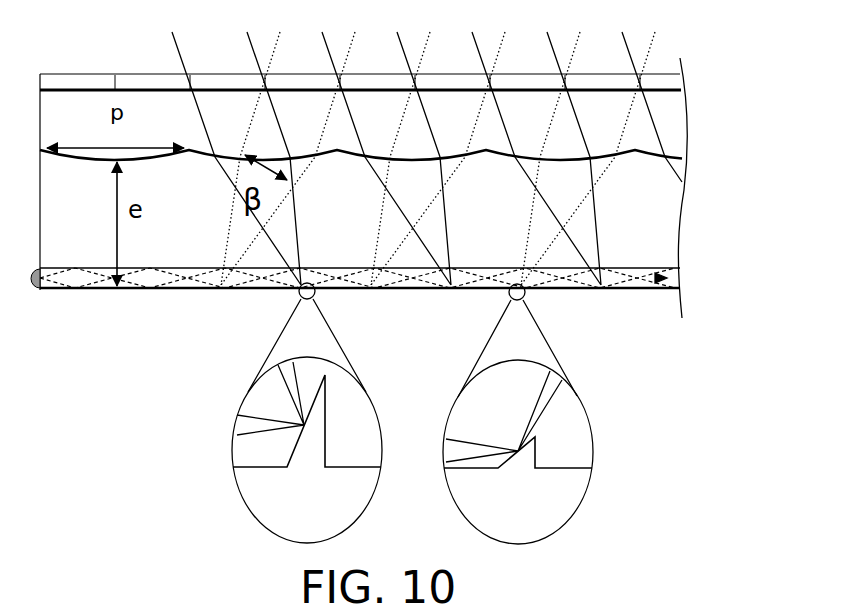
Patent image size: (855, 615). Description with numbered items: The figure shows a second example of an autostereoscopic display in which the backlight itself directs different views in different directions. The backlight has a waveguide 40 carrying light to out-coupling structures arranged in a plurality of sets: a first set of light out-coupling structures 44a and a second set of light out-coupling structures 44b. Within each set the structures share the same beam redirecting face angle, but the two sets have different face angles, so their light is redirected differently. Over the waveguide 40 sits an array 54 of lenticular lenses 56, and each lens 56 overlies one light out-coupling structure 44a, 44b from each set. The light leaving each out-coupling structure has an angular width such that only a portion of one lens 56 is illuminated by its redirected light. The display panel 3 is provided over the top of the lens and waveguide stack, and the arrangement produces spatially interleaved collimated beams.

The display panel 3 is at (138, 70).
The array of lenticular lenses 54 is at (712, 111).
The lenticular lens 56 is at (593, 158).
The waveguide 40 is at (628, 303).
The light out-coupling structures of the first set 44a is at (210, 294).
The light out-coupling structures of the second set 44b is at (458, 288).